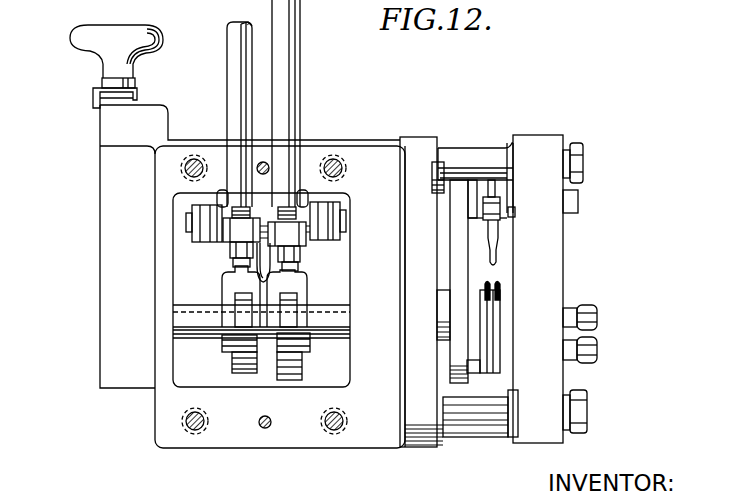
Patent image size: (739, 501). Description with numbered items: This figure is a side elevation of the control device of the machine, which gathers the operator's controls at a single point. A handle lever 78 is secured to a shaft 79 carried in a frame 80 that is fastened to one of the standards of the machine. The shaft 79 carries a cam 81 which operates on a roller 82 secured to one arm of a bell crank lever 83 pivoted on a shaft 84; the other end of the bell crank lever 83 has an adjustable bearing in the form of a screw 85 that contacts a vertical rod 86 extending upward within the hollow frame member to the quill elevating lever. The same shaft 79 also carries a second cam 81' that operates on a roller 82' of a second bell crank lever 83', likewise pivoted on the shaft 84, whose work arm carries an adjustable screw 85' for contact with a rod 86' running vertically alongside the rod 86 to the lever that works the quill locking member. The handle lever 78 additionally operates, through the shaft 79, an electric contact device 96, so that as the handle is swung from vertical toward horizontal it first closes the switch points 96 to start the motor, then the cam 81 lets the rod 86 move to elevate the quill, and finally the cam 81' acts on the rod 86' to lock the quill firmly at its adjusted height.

The handle lever 78 is at (83, 47).
The shaft 79 is at (190, 318).
The frame 80 is at (220, 433).
The cam 81 is at (239, 376).
The cam 81' is at (298, 377).
The roller 82 is at (217, 331).
The roller 82' is at (336, 305).
The bell crank lever 83 is at (226, 285).
The bell crank lever 83' is at (327, 286).
The shaft 84 is at (190, 227).
The screw 85 is at (181, 282).
The adjustable screw 85' is at (340, 242).
The vertical rod 86 is at (216, 140).
The rod 86' is at (311, 131).
The electric contact device 96 is at (498, 286).